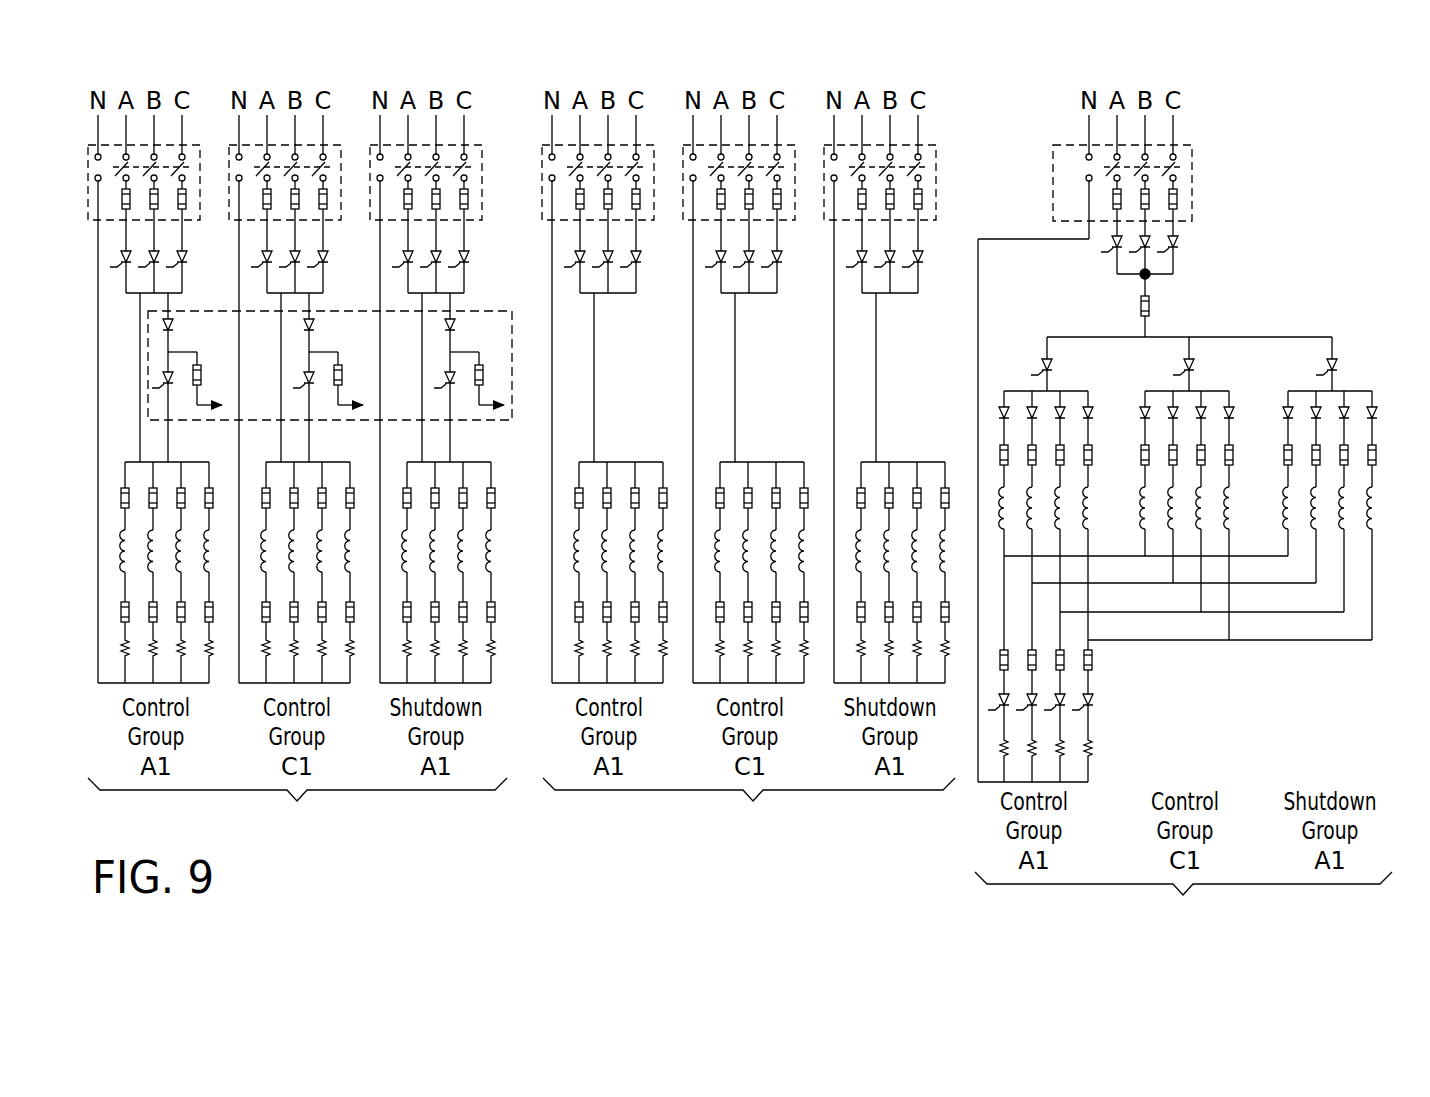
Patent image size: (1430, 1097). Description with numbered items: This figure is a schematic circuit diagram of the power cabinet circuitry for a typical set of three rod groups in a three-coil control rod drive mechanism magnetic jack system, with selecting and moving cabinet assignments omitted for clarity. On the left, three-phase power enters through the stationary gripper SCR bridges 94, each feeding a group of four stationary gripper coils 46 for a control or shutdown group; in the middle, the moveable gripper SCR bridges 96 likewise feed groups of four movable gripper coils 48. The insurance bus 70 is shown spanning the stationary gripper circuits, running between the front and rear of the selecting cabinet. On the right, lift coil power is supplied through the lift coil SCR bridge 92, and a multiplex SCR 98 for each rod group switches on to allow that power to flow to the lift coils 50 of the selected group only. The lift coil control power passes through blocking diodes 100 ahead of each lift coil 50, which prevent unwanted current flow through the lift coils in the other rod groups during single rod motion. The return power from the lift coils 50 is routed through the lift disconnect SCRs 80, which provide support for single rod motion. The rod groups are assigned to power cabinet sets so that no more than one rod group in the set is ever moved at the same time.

The stationary gripper coils 46 is at (216, 543).
The movable gripper coils 48 is at (670, 543).
The lift coils 50 is at (1094, 504).
The insurance bus 70 is at (369, 343).
The lift disconnect SCRs 80 is at (1098, 701).
The lift coil SCR bridge 92 is at (1192, 222).
The stationary gripper SCR bridge 94 is at (190, 222).
The moveable gripper SCR bridge 96 is at (644, 222).
The multiplex SCR 98 is at (1039, 357).
The blocking diodes 100 is at (1091, 405).